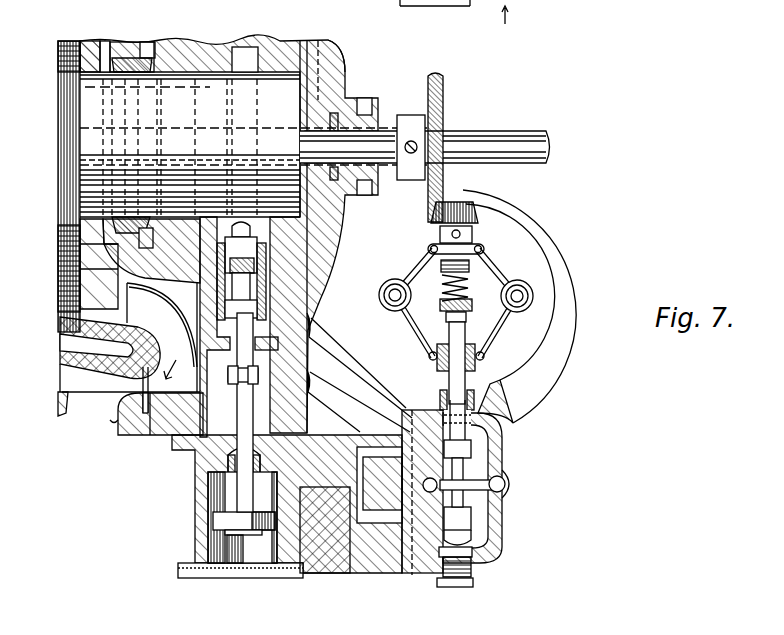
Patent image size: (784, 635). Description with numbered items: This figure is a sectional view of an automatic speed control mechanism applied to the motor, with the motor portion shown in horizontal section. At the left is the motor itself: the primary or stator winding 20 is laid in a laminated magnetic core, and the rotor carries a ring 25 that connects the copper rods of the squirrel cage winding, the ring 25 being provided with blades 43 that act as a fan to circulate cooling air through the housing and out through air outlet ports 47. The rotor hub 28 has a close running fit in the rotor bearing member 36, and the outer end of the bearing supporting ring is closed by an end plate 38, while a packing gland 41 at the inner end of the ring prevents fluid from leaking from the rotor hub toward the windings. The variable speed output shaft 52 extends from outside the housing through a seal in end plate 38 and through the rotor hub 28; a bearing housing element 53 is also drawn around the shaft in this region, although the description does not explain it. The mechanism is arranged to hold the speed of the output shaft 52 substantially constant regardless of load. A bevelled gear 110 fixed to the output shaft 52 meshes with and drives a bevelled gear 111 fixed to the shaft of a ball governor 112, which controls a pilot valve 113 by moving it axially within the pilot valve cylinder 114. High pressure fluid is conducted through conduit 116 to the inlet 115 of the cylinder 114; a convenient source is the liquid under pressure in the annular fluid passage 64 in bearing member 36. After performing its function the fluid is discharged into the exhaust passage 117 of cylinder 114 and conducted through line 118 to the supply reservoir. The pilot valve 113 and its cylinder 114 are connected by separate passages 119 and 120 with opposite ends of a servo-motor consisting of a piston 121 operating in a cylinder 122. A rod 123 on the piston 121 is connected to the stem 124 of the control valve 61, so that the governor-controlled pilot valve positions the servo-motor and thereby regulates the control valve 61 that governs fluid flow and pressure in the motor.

The primary winding 20 is at (63, 355).
The ring 25 is at (78, 41).
The rotor hub 28 is at (177, 87).
The rotor bearing member 36 is at (287, 42).
The end plate 38 is at (342, 50).
The packing gland 41 is at (128, 67).
The blades 43 is at (88, 50).
The air outlet ports 47 is at (100, 427).
The variable speed output shaft 52 is at (513, 148).
The bearing housing 53 is at (375, 100).
The control valve 61 is at (270, 268).
The annular fluid passage 64 is at (245, 58).
The bevelled gear 110 is at (443, 92).
The bevelled gear 111 is at (470, 217).
The ball governor 112 is at (395, 288).
The pilot valve 113 is at (460, 522).
The pilot valve cylinder 114 is at (467, 502).
The inlet 115 is at (470, 480).
The conduit 116 is at (323, 387).
The exhaust passage 117 is at (490, 443).
The line 118 is at (320, 328).
The passage 119 is at (327, 553).
The passage 120 is at (315, 485).
The piston 121 is at (212, 517).
The cylinder 122 is at (227, 535).
The rod 123 is at (253, 418).
The stem 124 is at (240, 367).